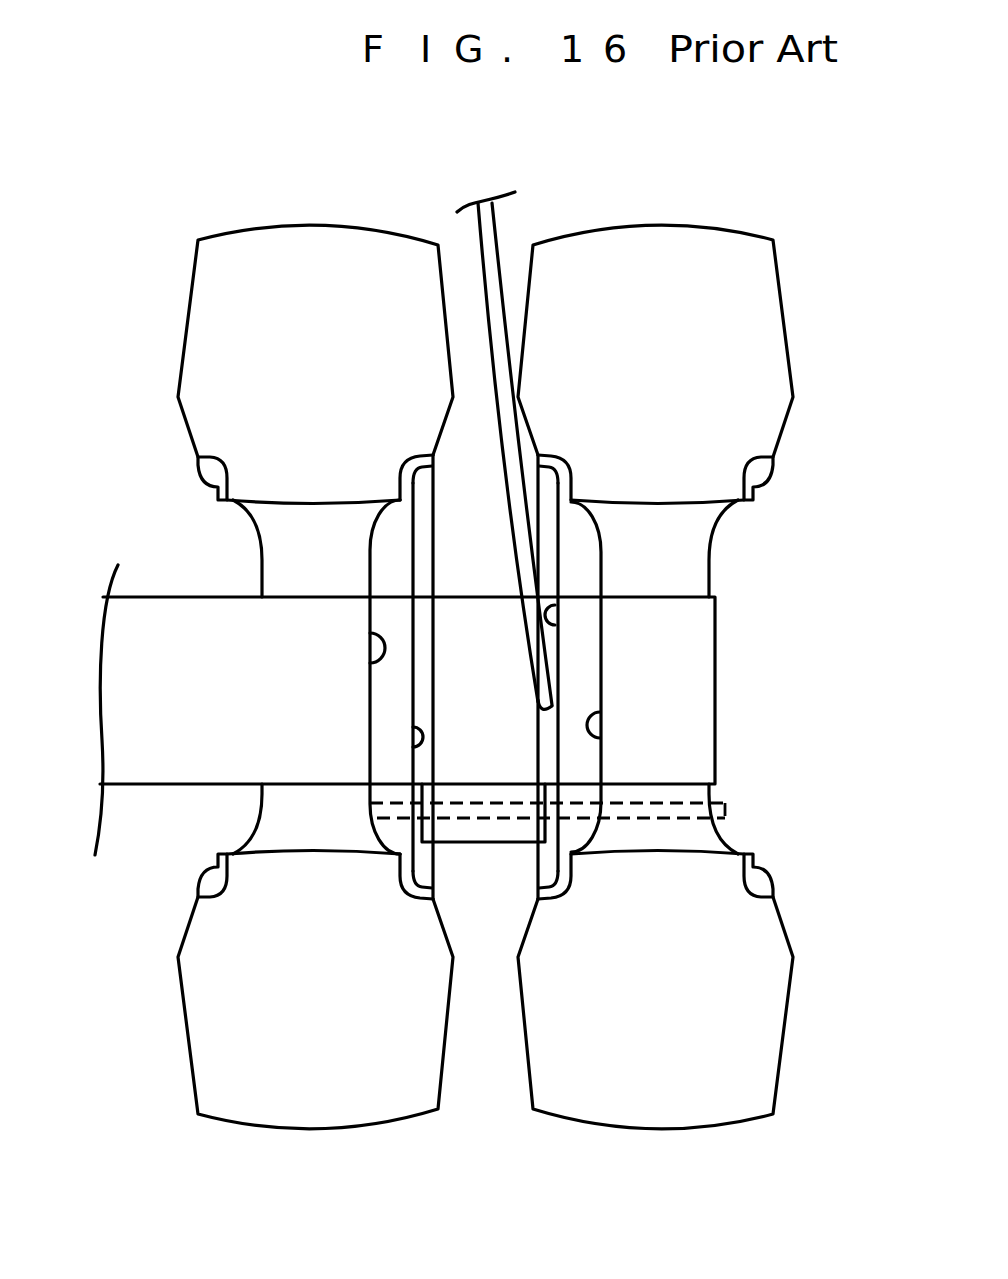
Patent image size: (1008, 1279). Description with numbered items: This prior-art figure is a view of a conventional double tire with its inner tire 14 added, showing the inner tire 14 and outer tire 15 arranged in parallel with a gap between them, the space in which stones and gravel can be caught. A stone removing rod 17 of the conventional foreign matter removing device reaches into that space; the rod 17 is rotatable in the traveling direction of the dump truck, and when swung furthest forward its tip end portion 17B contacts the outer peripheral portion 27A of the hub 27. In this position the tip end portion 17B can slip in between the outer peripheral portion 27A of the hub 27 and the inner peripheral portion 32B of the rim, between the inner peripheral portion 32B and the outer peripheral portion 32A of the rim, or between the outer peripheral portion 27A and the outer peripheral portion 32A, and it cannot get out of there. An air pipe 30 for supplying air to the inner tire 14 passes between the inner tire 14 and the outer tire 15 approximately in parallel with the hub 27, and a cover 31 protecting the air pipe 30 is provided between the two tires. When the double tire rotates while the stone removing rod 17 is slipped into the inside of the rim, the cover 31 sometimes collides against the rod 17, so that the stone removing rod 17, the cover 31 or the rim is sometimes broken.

The inner tire 14 is at (322, 1112).
The outer tire 15 is at (613, 1112).
The stone removing rod 17 is at (498, 221).
The tip end portion 17B is at (538, 694).
The hub 27 is at (683, 657).
The outer peripheral portion of the hub 27A is at (370, 637).
The air pipe 30 is at (727, 810).
The cover 31 is at (467, 845).
The outer peripheral portion of the rim 32A is at (420, 833).
The inner peripheral portion of the rim 32B is at (413, 745).